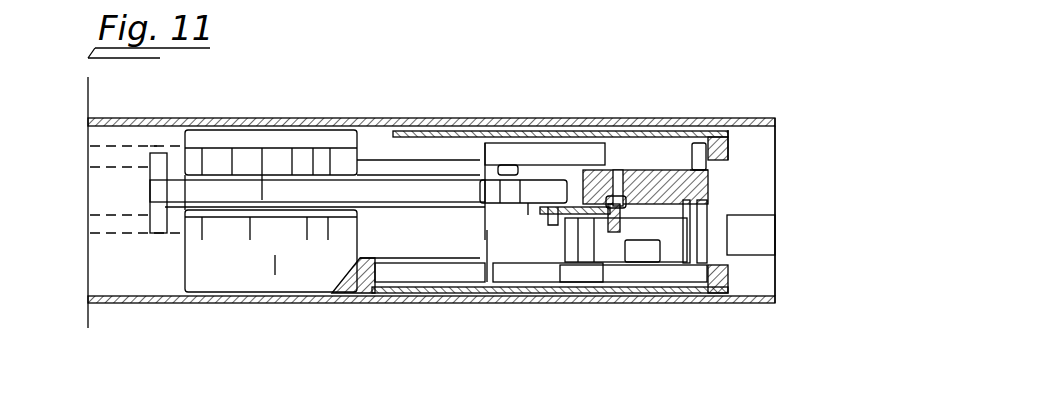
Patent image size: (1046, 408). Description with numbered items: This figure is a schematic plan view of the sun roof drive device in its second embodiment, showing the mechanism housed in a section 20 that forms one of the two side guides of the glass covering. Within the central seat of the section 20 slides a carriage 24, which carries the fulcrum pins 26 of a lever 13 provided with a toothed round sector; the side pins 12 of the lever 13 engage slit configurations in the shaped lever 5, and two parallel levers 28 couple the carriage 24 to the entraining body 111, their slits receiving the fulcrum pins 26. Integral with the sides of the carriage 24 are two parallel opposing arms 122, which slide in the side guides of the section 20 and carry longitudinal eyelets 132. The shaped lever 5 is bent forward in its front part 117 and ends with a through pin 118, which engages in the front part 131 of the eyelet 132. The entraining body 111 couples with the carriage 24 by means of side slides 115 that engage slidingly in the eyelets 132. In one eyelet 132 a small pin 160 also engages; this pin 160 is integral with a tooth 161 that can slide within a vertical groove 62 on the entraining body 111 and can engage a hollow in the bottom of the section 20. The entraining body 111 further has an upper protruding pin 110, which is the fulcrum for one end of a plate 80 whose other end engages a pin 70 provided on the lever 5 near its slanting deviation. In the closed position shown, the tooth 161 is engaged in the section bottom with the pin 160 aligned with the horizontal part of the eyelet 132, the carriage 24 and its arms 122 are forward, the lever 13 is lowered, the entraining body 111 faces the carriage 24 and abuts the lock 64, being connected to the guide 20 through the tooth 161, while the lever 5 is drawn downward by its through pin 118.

The shaped lever 5 is at (560, 117).
The pin 12 is at (163, 153).
The lever 13 is at (262, 145).
The section 20 is at (758, 207).
The carriage 24 is at (300, 263).
The pin 26 is at (322, 147).
The parallel lever 28 is at (430, 205).
The vertical groove 62 is at (552, 226).
The lock 64 is at (760, 235).
The pin 70 is at (619, 170).
The plate 80 is at (490, 250).
The upper protruding pin 110 is at (347, 307).
The entraining body 111 is at (483, 215).
The side slide 115 is at (497, 150).
The front part 117 is at (672, 176).
The through pin 118 is at (715, 132).
The arm 122 is at (583, 143).
The front part of eyelet 131 is at (728, 147).
The longitudinal eyelet 132 is at (641, 147).
The small pin 160 is at (640, 265).
The tooth 161 is at (611, 234).